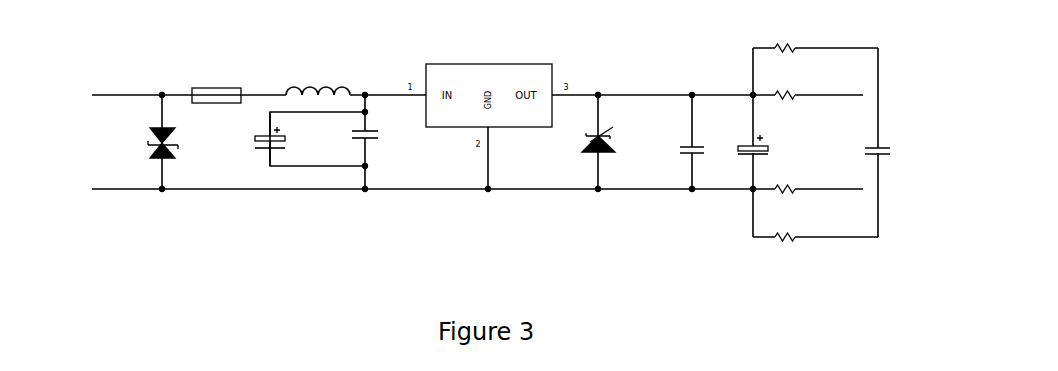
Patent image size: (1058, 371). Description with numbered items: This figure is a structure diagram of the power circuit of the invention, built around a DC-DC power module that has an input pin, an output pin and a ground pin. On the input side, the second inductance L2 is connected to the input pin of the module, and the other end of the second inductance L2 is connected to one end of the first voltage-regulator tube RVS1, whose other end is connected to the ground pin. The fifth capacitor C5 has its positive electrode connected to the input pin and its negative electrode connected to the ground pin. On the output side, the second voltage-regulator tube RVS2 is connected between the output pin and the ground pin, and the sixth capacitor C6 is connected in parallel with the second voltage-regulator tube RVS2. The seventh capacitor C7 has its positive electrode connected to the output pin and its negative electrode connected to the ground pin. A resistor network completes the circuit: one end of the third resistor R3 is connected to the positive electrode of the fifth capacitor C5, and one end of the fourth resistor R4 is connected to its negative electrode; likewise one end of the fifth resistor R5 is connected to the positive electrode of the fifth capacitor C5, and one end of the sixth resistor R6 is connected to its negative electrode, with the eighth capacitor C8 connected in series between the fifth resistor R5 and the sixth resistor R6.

The first voltage-regulator tube RVS1 is at (182, 142).
The second inductance L2 is at (318, 80).
The fifth capacitor C5 is at (256, 139).
The second voltage-regulator tube RVS2 is at (574, 142).
The sixth capacitor C6 is at (676, 142).
The seventh capacitor C7 is at (746, 137).
The eighth capacitor C8 is at (889, 148).
The third resistor R3 is at (785, 84).
The fourth resistor R4 is at (785, 178).
The fifth resistor R5 is at (785, 36).
The sixth resistor R6 is at (785, 249).